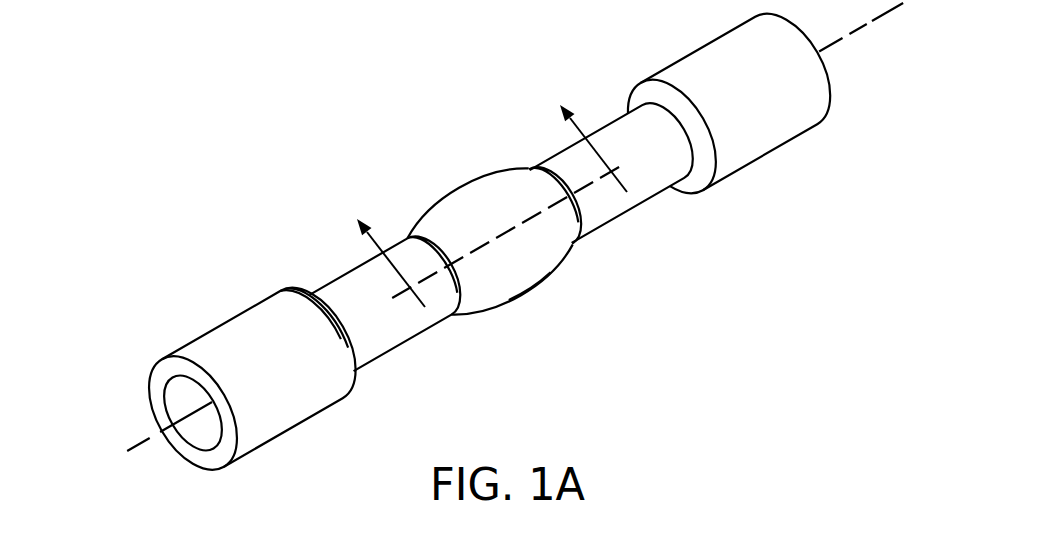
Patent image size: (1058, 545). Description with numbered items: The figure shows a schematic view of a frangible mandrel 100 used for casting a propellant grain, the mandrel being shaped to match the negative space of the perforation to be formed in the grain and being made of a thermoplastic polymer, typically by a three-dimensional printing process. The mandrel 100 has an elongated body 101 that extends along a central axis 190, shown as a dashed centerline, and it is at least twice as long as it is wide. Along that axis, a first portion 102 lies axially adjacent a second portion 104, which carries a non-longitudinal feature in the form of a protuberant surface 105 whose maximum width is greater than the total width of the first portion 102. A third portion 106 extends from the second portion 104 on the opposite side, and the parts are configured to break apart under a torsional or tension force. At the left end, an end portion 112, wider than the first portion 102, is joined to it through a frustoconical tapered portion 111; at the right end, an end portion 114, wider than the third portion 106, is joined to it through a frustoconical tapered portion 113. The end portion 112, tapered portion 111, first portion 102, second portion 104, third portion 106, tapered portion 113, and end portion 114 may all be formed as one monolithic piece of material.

The mandrel 100 is at (318, 118).
The elongated body 101 is at (250, 246).
The first portion 102 is at (395, 338).
The second portion 104 is at (530, 277).
The protuberant surface 105 is at (528, 308).
The third portion 106 is at (606, 196).
The tapered portion 111 is at (345, 345).
The end portion 112 is at (270, 409).
The tapered portion 113 is at (691, 176).
The end portion 114 is at (785, 122).
The central axis 190 is at (138, 443).